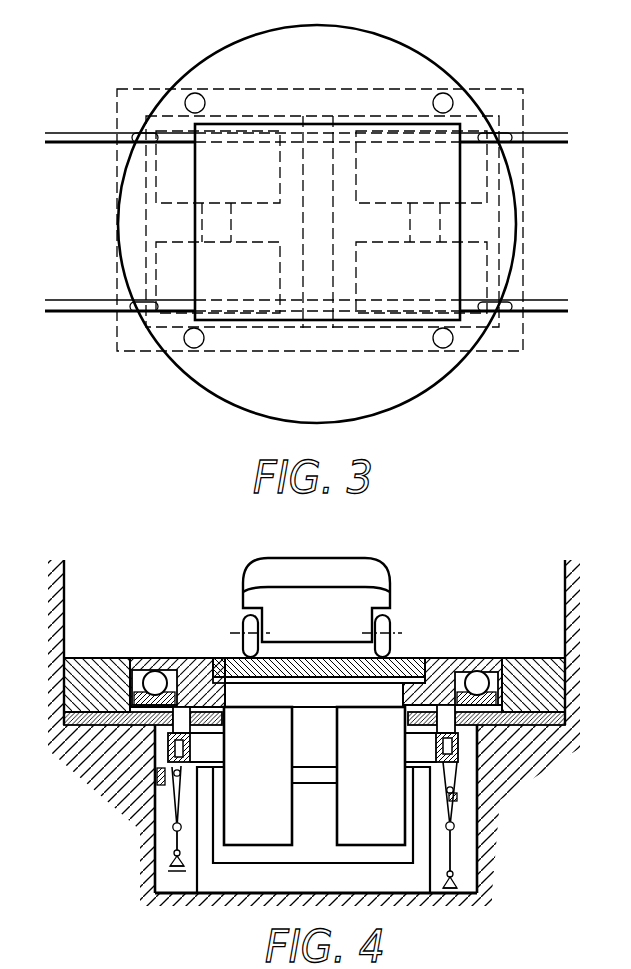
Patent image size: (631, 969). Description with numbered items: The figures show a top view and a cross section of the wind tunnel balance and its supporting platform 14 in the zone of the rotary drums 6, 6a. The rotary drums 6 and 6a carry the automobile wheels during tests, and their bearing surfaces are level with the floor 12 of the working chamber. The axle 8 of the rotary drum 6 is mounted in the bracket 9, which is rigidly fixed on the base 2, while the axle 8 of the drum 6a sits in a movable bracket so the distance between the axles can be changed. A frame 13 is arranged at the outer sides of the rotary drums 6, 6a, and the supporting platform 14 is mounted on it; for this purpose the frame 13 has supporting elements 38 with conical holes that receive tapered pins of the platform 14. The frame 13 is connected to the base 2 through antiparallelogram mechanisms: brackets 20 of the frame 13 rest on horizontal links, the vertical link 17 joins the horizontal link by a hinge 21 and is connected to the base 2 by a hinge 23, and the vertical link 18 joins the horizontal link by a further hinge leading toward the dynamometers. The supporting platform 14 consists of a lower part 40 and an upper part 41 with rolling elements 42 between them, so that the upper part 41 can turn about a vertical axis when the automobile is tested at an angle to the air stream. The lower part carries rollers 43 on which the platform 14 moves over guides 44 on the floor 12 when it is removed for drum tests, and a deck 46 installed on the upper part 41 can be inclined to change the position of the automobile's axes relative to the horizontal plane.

In FIG. 4, the base 2 is at (478, 876).
In FIG. 3, the rotary drum 6 is at (478, 178).
In FIG. 4, the rotary drum 6 is at (338, 830).
In FIG. 3, the rotary drum 6a is at (165, 178).
In FIG. 3, the axle 8 is at (229, 221).
In FIG. 4, the axle 8 is at (315, 779).
In FIG. 4, the bracket 9 is at (413, 884).
In FIG. 4, the floor 12 is at (90, 727).
In FIG. 3, the frame 13 is at (492, 90).
In FIG. 4, the frame 13 is at (455, 777).
In FIG. 4, the supporting platform 14 is at (165, 648).
In FIG. 4, the vertical link 17 is at (171, 795).
In FIG. 4, the vertical link 18 is at (172, 848).
In FIG. 4, the bracket 20 is at (168, 765).
In FIG. 4, the hinge 21 is at (172, 828).
In FIG. 4, the hinge 23 is at (157, 778).
In FIG. 3, the supporting element 38 is at (443, 92).
In FIG. 4, the supporting element 38 is at (459, 746).
In FIG. 4, the lower part 40 is at (503, 690).
In FIG. 3, the upper part 41 is at (247, 45).
In FIG. 4, the upper part 41 is at (433, 670).
In FIG. 4, the rolling element 42 is at (478, 672).
In FIG. 3, the roller 43 is at (497, 133).
In FIG. 3, the guide 44 is at (90, 133).
In FIG. 4, the deck 46 is at (230, 666).